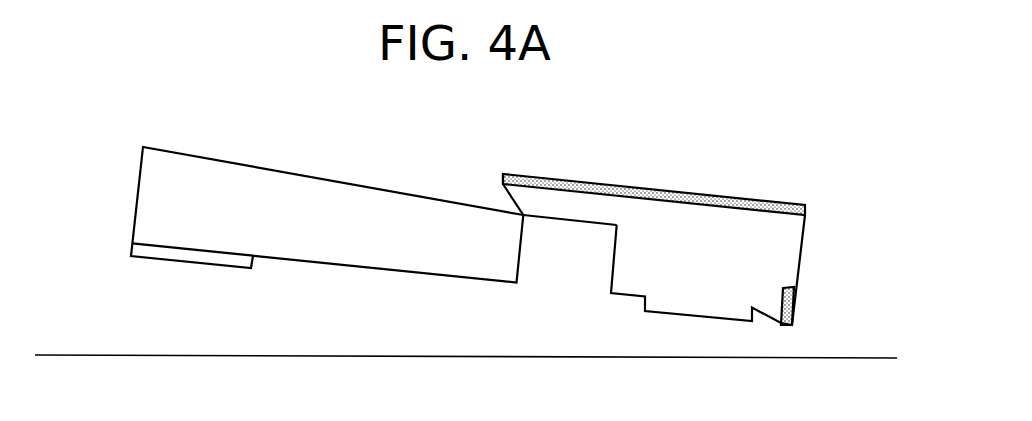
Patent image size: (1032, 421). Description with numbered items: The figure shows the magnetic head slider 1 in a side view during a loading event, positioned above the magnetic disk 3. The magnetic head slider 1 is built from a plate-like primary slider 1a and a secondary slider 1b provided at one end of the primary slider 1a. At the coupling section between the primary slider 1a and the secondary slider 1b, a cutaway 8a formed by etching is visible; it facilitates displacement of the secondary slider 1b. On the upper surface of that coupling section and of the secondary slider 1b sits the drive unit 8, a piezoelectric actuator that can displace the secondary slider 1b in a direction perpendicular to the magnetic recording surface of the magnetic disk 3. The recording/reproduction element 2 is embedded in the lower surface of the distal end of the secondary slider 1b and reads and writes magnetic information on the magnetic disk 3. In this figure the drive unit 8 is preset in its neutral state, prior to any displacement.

The magnetic head slider 1 is at (468, 183).
The primary slider 1a is at (345, 178).
The secondary slider 1b is at (735, 223).
The drive unit 8 is at (645, 187).
The cutaway 8a is at (560, 238).
The recording/reproduction element 2 is at (793, 307).
The magnetic disk 3 is at (232, 355).